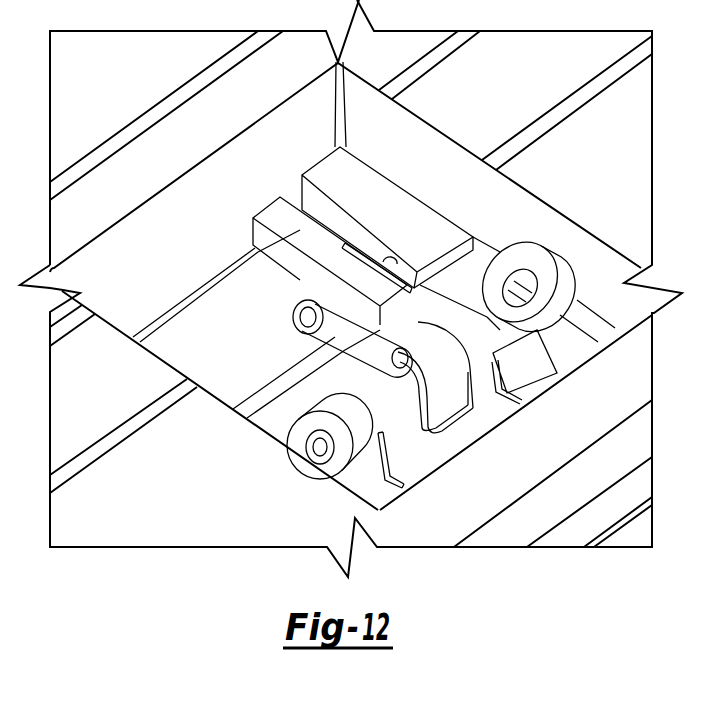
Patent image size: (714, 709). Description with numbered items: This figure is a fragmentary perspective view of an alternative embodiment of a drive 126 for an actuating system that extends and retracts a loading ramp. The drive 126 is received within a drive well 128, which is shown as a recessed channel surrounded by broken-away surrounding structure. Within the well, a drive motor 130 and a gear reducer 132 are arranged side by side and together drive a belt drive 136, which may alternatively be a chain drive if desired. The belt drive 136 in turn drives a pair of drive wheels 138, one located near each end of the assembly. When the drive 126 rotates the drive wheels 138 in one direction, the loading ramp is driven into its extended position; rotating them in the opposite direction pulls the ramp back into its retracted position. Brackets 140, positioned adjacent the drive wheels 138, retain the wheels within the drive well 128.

The drive 126 is at (243, 198).
The drive well 128 is at (412, 143).
The drive motor 130 is at (415, 206).
The gear reducer 132 is at (273, 220).
The belt drive 136 is at (327, 296).
The drive wheels 138 is at (537, 262).
The brackets 140 is at (411, 438).